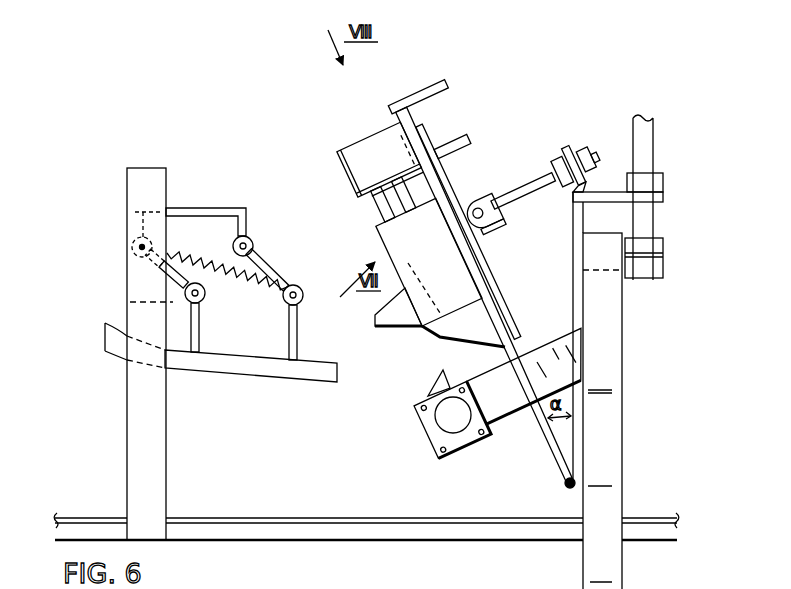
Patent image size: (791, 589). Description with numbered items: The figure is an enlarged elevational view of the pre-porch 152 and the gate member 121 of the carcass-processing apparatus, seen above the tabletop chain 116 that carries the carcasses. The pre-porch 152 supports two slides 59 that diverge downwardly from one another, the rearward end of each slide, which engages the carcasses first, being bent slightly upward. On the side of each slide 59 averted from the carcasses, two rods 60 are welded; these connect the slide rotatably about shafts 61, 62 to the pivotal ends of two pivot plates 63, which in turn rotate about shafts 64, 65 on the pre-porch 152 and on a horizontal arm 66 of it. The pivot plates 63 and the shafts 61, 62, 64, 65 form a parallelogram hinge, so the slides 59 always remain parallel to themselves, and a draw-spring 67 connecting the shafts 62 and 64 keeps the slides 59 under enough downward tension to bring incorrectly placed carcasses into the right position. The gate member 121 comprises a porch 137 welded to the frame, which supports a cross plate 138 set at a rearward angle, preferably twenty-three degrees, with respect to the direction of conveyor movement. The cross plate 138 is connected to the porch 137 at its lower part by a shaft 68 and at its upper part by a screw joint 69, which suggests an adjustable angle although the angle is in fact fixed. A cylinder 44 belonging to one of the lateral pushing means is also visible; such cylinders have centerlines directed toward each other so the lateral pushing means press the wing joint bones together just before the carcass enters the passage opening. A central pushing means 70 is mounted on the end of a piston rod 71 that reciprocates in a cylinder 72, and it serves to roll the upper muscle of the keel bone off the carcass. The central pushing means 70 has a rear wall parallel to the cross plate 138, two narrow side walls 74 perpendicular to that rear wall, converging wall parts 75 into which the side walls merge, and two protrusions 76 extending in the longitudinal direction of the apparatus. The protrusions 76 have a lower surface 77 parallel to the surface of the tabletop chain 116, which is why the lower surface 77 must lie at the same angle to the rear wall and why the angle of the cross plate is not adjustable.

The mounting block 44 is at (448, 420).
The slide 59 is at (240, 369).
The rod 60 is at (199, 326).
The shaft 61 is at (206, 294).
The shaft 62 is at (304, 297).
The pivot plate 63 is at (165, 278).
The shaft 64 is at (130, 245).
The shaft 65 is at (250, 238).
The horizontal arm 66 is at (210, 207).
The draw-spring 67 is at (206, 258).
The shaft 68 is at (567, 487).
The screw joint 69 is at (572, 153).
The central pushing means 70 is at (425, 241).
The piston rod 71 is at (393, 202).
The cylinder 72 is at (382, 150).
The side wall 74 is at (475, 303).
The converging wall part 75 is at (418, 287).
The protrusion 76 is at (408, 318).
The lower surface 77 is at (380, 328).
The tabletop chain 116 is at (223, 517).
The gate member 121 is at (455, 86).
The porch 137 is at (616, 457).
The cross plate 138 is at (510, 350).
The pre-porch 152 is at (121, 147).